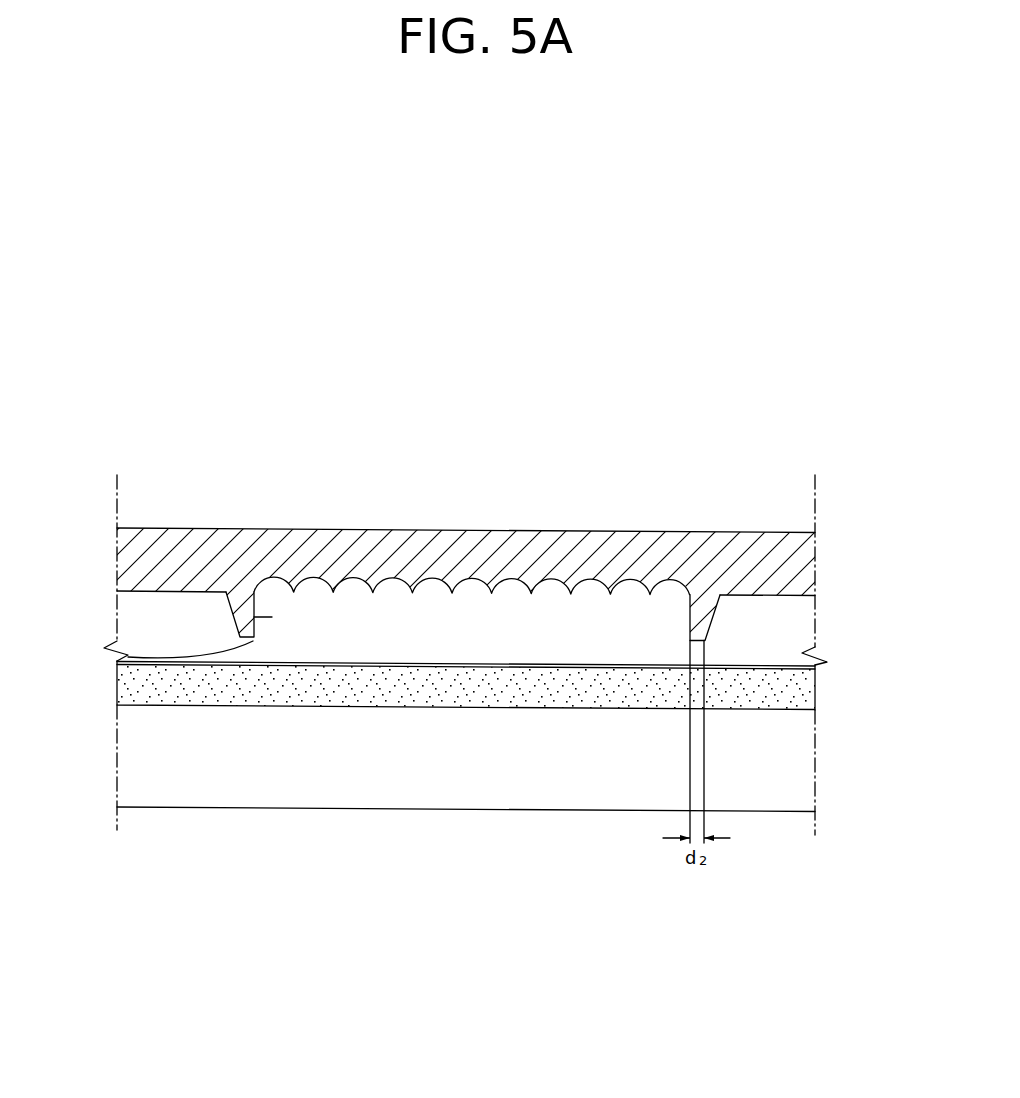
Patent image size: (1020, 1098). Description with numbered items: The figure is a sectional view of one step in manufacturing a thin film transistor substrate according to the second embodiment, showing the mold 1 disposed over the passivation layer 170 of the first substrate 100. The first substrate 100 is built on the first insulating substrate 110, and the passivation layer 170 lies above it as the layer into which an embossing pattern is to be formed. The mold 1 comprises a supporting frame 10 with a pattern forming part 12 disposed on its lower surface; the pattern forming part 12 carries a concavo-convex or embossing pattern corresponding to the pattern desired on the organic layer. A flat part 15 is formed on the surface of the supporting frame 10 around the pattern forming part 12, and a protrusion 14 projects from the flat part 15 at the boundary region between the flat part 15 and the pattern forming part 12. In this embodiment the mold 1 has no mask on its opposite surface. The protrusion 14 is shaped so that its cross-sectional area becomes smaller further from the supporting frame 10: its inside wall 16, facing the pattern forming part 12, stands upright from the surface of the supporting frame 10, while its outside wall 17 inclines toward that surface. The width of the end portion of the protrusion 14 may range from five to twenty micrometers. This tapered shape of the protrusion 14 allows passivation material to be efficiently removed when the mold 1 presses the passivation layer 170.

The mold 1 is at (681, 423).
The supporting frame 10 is at (125, 556).
The pattern forming part 12 is at (462, 578).
The protrusion 14 is at (117, 665).
The flat part 15 is at (223, 592).
The inside wall 16 is at (272, 617).
The outside wall 17 is at (236, 614).
The first substrate 100 is at (620, 872).
The first insulating substrate 110 is at (802, 762).
The passivation layer 170 is at (803, 687).